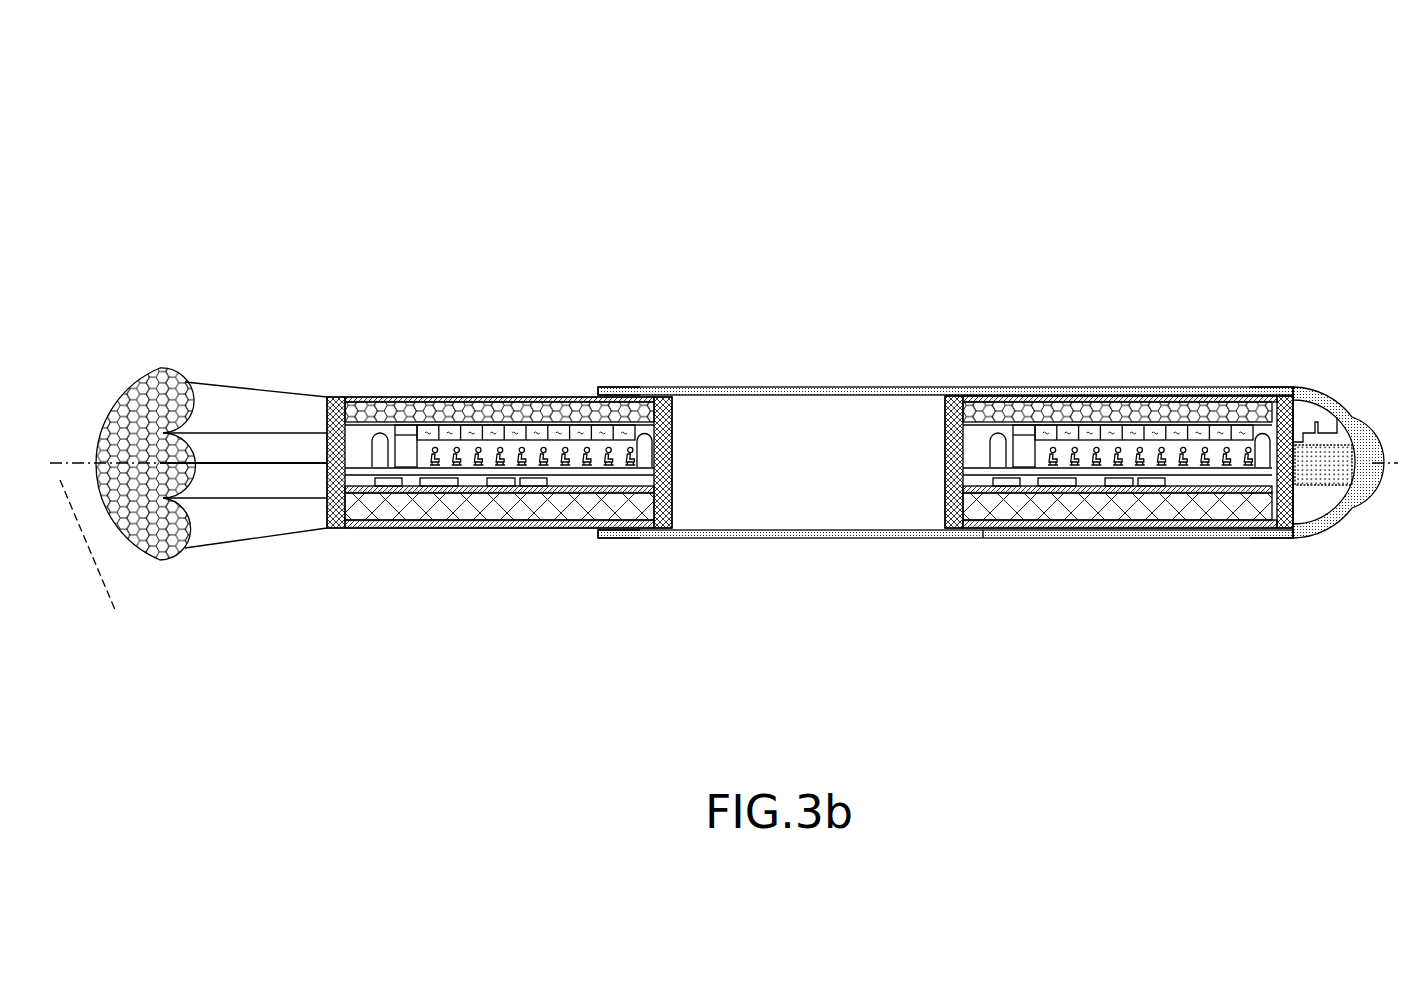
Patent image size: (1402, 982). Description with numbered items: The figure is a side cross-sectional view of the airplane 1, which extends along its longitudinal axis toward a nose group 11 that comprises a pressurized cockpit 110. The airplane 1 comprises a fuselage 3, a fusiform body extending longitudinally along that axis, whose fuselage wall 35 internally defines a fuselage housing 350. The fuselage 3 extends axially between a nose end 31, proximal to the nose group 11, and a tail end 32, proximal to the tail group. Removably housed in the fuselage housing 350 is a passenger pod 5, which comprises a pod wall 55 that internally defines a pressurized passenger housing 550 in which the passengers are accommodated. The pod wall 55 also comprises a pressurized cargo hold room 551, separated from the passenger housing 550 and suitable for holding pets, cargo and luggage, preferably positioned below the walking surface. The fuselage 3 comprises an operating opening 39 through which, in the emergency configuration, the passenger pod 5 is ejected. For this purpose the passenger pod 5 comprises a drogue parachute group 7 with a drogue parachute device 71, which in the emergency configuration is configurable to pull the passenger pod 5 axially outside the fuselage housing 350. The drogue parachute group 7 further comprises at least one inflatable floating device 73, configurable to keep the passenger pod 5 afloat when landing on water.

The airplane 1 is at (636, 128).
The drogue parachute group 7 is at (236, 310).
The drogue parachute device 71 is at (122, 363).
The passenger pod 5 is at (450, 388).
The pod wall 55 is at (400, 390).
The passenger housing 550 is at (508, 445).
The cargo hold room 551 is at (500, 492).
The inflatable floating device 73 is at (390, 510).
The fuselage 3 is at (835, 333).
The tail end 32 is at (611, 370).
The fuselage wall 35 is at (742, 388).
The fuselage housing 350 is at (757, 472).
The operating opening 39 is at (597, 533).
The nose end 31 is at (1260, 376).
The nose group 11 is at (1320, 370).
The pressurized cockpit 110 is at (1320, 500).